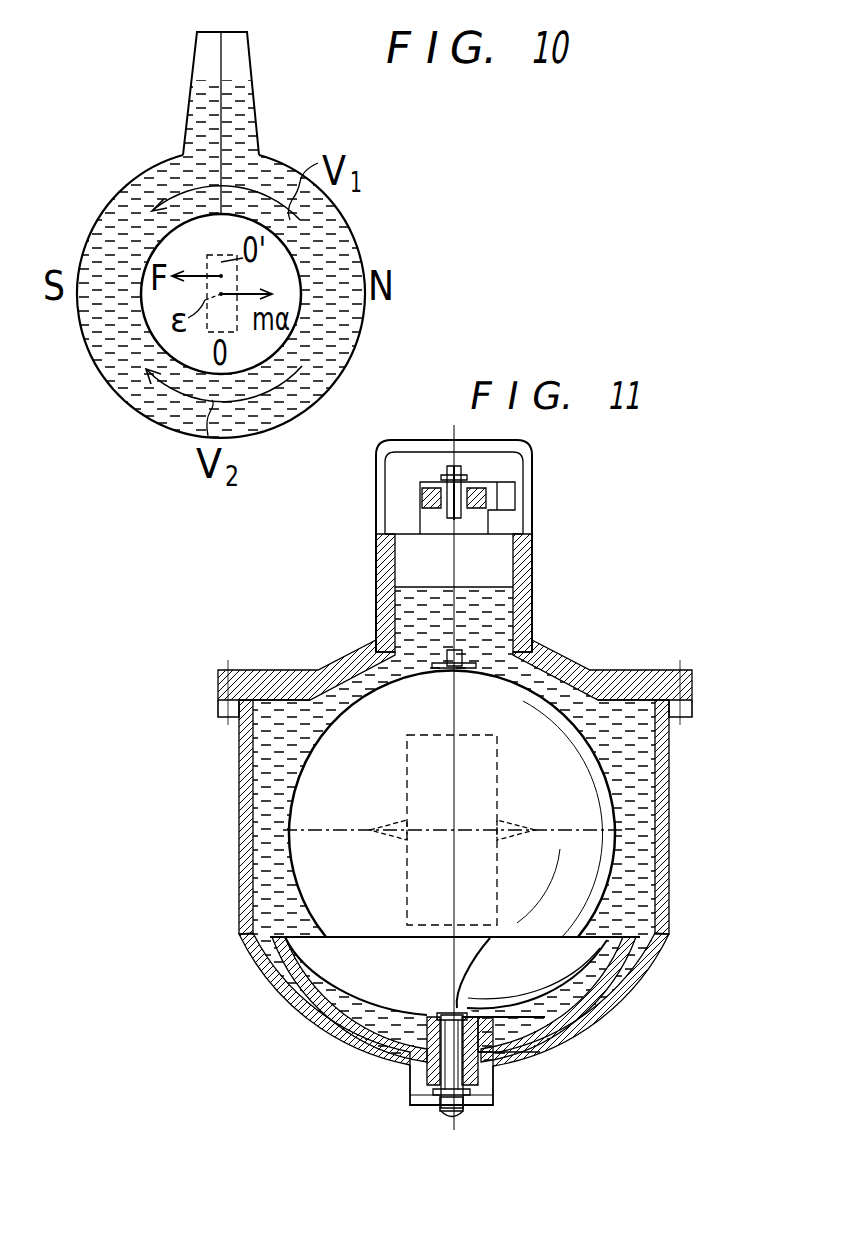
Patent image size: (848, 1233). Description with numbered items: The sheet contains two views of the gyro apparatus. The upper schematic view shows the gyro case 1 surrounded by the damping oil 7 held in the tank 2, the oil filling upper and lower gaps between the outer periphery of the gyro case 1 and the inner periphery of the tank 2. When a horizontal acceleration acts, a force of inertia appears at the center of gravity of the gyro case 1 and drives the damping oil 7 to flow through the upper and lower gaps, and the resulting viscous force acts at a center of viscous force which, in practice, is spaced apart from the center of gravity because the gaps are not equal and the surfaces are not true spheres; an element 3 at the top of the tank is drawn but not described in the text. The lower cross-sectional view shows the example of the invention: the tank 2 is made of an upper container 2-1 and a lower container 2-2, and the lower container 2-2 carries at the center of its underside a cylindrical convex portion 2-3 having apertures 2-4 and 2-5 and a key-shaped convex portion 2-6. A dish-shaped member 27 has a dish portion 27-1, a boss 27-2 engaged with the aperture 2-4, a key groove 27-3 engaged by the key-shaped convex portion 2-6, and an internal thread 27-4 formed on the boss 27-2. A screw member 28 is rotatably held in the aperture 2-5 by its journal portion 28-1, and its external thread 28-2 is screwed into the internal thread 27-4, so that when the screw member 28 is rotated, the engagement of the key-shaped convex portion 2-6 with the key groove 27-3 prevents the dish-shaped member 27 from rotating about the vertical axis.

In FIG. 10, the gyro case 1 is at (143, 320).
In FIG. 11, the gyro case 1 is at (350, 722).
In FIG. 10, the tank 2 is at (97, 214).
In FIG. 11, the tank 2 is at (668, 848).
In FIG. 10, the shaft 3 is at (222, 57).
In FIG. 11, the shaft 3 is at (455, 572).
In FIG. 10, the damping oil 7 is at (152, 171).
In FIG. 11, the damping oil 7 is at (572, 648).
In FIG. 11, the upper container 2-1 is at (692, 685).
In FIG. 11, the lower container 2-2 is at (668, 783).
In FIG. 11, the cylindrical convex portion 2-3 is at (492, 1092).
In FIG. 11, the aperture 2-4 is at (412, 1081).
In FIG. 11, the aperture 2-5 is at (422, 1107).
In FIG. 11, the key-shaped convex portion 2-6 is at (494, 1078).
In FIG. 11, the dish-shaped member 27 is at (525, 1020).
In FIG. 11, the dish portion 27-1 is at (636, 946).
In FIG. 11, the boss 27-2 is at (535, 1035).
In FIG. 11, the key groove 27-3 is at (568, 1010).
In FIG. 11, the internal thread 27-4 is at (600, 985).
In FIG. 11, the screw member 28 is at (511, 1122).
In FIG. 11, the journal portion 28-1 is at (462, 1120).
In FIG. 11, the external thread 28-2 is at (480, 1098).